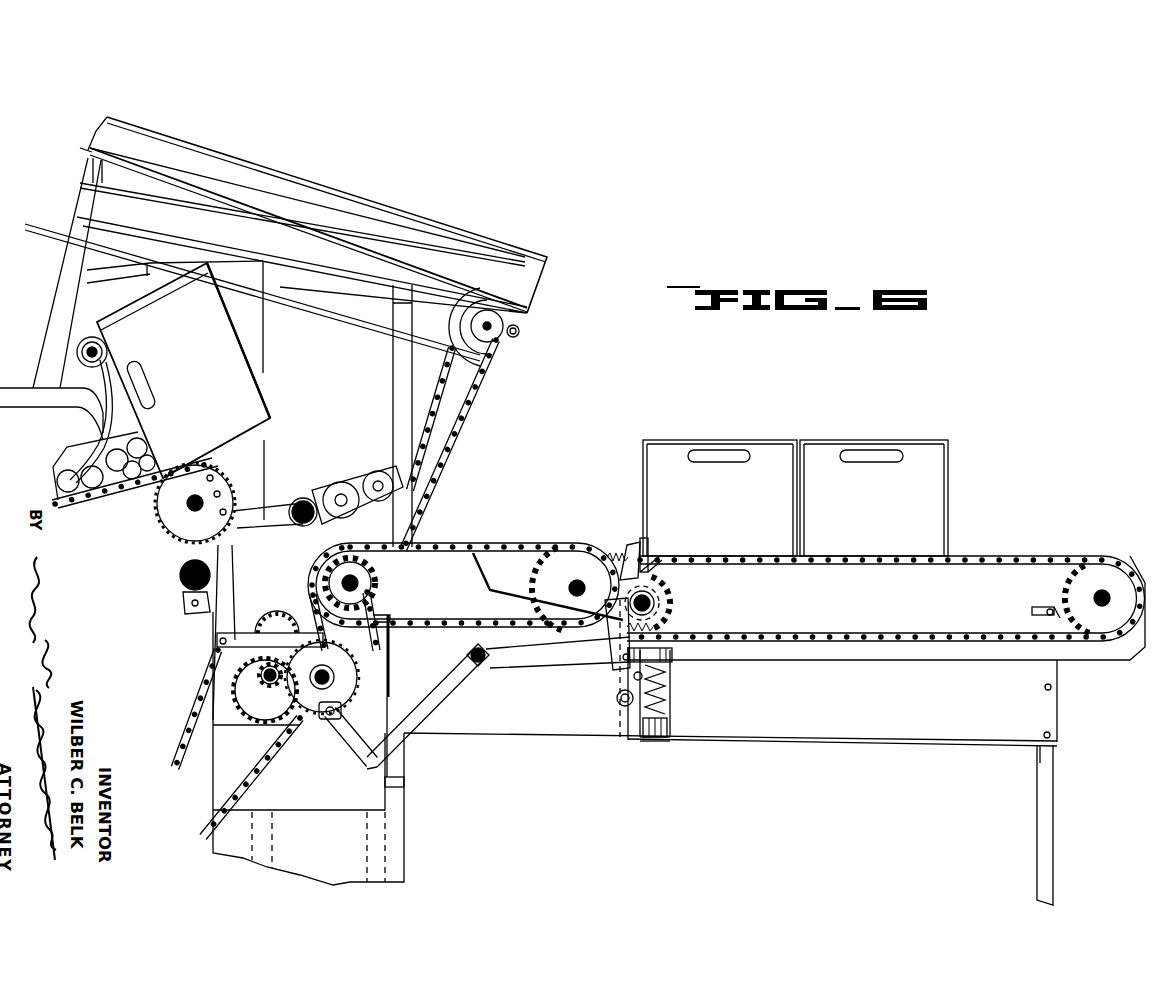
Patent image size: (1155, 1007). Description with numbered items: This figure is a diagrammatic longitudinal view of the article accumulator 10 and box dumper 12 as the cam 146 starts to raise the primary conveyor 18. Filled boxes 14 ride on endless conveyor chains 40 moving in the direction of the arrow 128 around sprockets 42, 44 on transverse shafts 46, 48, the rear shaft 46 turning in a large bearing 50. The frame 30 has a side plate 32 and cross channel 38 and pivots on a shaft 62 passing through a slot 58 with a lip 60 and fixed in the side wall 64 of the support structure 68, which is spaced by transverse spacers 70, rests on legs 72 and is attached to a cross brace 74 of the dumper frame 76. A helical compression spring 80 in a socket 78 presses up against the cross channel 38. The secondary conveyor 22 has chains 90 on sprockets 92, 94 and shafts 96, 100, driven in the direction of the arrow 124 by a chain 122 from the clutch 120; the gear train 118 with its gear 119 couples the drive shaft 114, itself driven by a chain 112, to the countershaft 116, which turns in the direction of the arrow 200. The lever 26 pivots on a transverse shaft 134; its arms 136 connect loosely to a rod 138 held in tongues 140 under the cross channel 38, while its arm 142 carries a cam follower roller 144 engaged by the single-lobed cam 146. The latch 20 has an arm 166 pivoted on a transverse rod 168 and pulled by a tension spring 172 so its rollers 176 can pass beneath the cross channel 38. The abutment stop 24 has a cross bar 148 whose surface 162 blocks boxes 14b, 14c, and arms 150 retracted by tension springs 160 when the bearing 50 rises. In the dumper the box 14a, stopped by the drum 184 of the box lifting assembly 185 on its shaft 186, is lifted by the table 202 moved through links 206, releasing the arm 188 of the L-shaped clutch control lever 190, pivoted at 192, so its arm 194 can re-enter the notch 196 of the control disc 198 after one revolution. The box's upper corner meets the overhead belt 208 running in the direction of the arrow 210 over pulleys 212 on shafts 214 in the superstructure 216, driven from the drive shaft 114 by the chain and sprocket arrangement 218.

The article accumulator 10 is at (1043, 501).
The box dumper 12 is at (460, 192).
The filled boxes 14 is at (600, 455).
The box 14a is at (198, 382).
The box 14b is at (737, 511).
The box 14c is at (887, 511).
The primary conveyor 18 is at (975, 555).
The latch 20 is at (620, 697).
The secondary conveyor 22 is at (485, 545).
The abutment stop 24 is at (633, 540).
The lever 26 is at (489, 680).
The frame 30 is at (960, 663).
The side plate 32 is at (918, 608).
The cross channel 38 is at (673, 656).
The endless conveyor chains 40 is at (870, 637).
The sprocket 42 is at (672, 578).
The sprocket 44 is at (1066, 568).
The transverse shaft 46 is at (658, 606).
The transverse shaft 48 is at (1104, 593).
The bearing 50 is at (660, 612).
The slot 58 is at (1040, 610).
The lip 60 is at (1046, 607).
The shaft 62 is at (1055, 616).
The side wall 64 is at (905, 718).
The support structure 68 is at (657, 749).
The transverse spacers 70 is at (1040, 753).
The legs 72 is at (1040, 780).
The cross brace 74 is at (391, 660).
The frame 76 is at (208, 779).
The socket 78 is at (648, 736).
The helical compression spring 80 is at (669, 695).
The endless chains 90 is at (500, 547).
The sprocket 92 is at (385, 552).
The sprocket 94 is at (540, 576).
The shaft 96 is at (376, 575).
The shaft 100 is at (584, 588).
The chain 112 is at (190, 723).
The drive shaft 114 is at (258, 676).
The countershaft 116 is at (299, 675).
The gear train 118 is at (256, 692).
The gear 119 is at (389, 685).
The clutch 120 is at (344, 671).
The chain 122 is at (360, 584).
The arrow 124 is at (568, 538).
The arrow 128 is at (850, 548).
The transverse shaft 134 is at (489, 652).
The arms 136 is at (497, 671).
The rod 138 is at (633, 677).
The tongues 140 is at (668, 668).
The arm 142 is at (420, 716).
The cam follower roller 144 is at (333, 745).
The single-lobed cam 146 is at (326, 724).
The cross bar 148 is at (649, 542).
The arms 150 is at (625, 548).
The tension springs 160 is at (612, 556).
The surface 162 is at (650, 558).
The arm 166 is at (620, 636).
The transverse rod 168 is at (636, 713).
The tension spring 172 is at (660, 628).
The roller 176 is at (624, 658).
The drum 184 is at (170, 517).
The box lifting assembly 185 is at (357, 474).
The shaft 186 is at (191, 510).
The arm 188 is at (233, 557).
The clutch control lever 190 is at (232, 580).
The pivot 192 is at (220, 640).
The arm 194 is at (212, 626).
The notch 196 is at (346, 692).
The control disc 198 is at (305, 688).
The arrow 200 is at (255, 641).
The table 202 is at (358, 481).
The links 206 is at (316, 485).
The overhead belt 208 is at (496, 372).
The arrow 210 is at (326, 329).
The pulleys 212 is at (501, 352).
The shafts 214 is at (518, 338).
The superstructure 216 is at (540, 293).
The chain and sprocket arrangement 218 is at (485, 412).